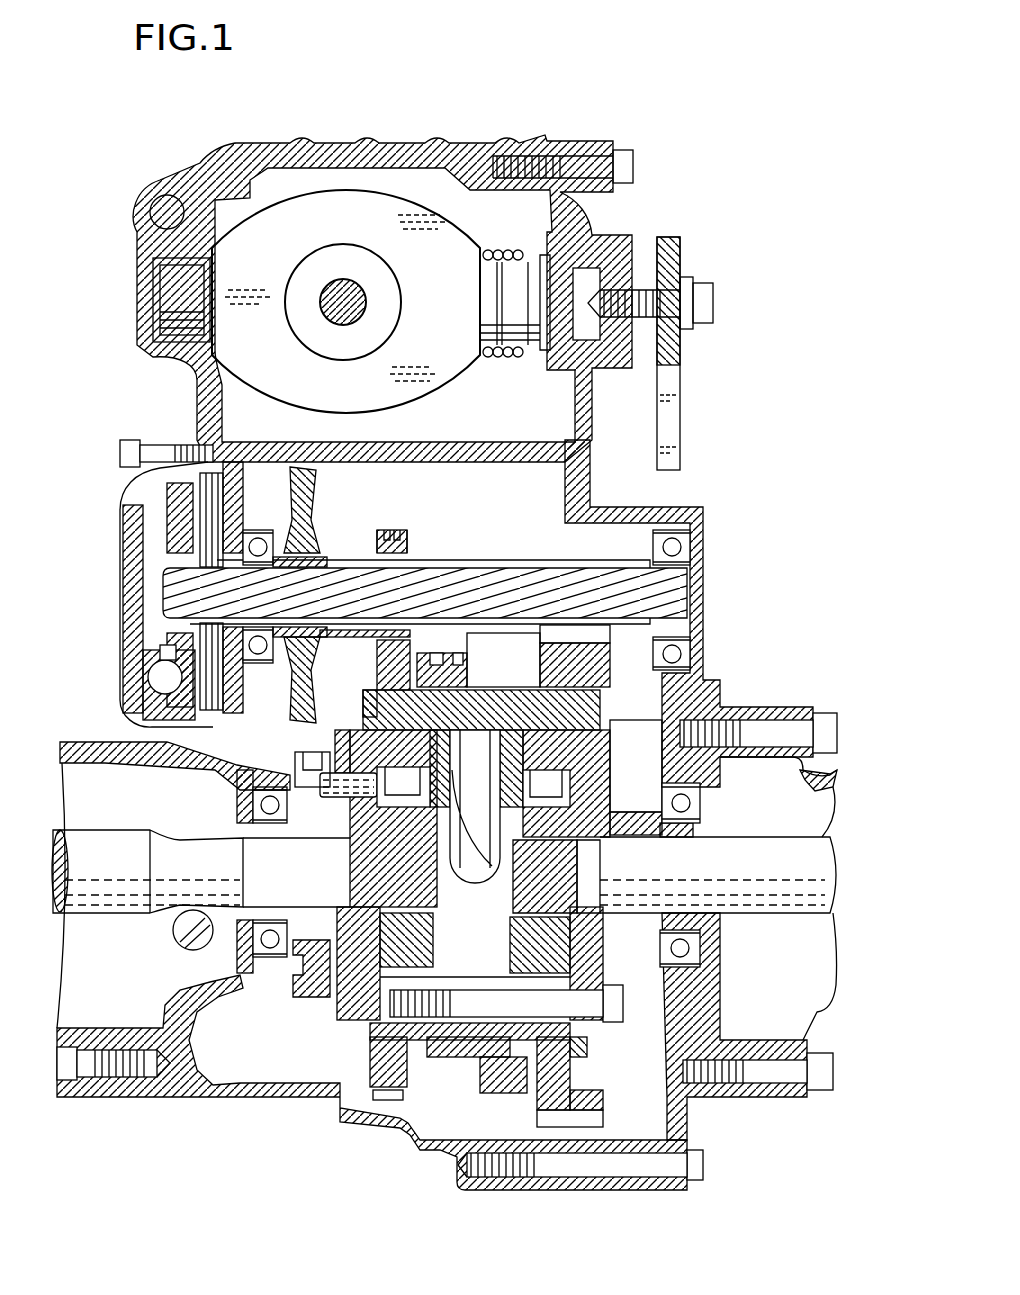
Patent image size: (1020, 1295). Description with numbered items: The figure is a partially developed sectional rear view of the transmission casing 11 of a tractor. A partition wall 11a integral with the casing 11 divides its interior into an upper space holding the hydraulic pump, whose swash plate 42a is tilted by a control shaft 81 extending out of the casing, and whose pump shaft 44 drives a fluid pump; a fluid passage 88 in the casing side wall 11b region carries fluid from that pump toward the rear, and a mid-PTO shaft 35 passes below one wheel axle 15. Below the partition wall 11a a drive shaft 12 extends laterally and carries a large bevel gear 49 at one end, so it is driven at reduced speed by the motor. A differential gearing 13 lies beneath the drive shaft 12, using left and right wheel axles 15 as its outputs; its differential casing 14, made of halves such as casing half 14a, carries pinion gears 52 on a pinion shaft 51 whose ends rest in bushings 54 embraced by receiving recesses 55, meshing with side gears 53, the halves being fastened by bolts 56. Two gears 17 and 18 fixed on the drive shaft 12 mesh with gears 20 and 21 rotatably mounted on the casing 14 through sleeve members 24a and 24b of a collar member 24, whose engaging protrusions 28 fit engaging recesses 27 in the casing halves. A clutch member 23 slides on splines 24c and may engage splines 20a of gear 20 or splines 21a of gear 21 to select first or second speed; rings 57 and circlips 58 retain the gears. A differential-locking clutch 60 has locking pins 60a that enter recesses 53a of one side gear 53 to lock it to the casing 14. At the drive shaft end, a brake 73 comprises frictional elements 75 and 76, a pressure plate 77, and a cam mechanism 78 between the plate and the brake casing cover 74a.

The transmission casing 11 is at (270, 1090).
The partition wall 11a is at (450, 455).
The housing side wall 11b is at (693, 693).
The drive shaft 12 is at (463, 583).
The differential gearing 13 is at (336, 1074).
The differential casing 14 is at (343, 1010).
The casing half 14a is at (590, 795).
The wheel axles 15 is at (92, 893).
The gear 17 is at (520, 563).
The gear 18 is at (390, 538).
The gear 20 is at (640, 1124).
The splines 20a is at (578, 692).
The gear 21 is at (383, 1108).
The splines 21a is at (408, 1137).
The clutch member 23 is at (457, 650).
The collar member 24 is at (497, 718).
The sleeve member 24a is at (588, 718).
The sleeve member 24b is at (312, 703).
The splines 24c is at (440, 1057).
The engaging recesses 27 is at (320, 760).
The engaging protrusions 28 is at (459, 663).
The mid-PTO shaft 35 is at (188, 936).
The swash plate 42a is at (362, 217).
The pump shaft 44 is at (365, 302).
The large bevel gear 49 is at (308, 482).
The pinion shaft 51 is at (487, 876).
The pinion gears 52 is at (585, 860).
The side gears 53 is at (445, 935).
The recesses 53a is at (300, 838).
The bushings 54 is at (445, 853).
The receiving recesses 55 is at (345, 870).
The bolts 56 is at (570, 997).
The rings 57 is at (372, 705).
The circlips 58 is at (365, 697).
The differential-locking clutch 60 is at (292, 978).
The locking pins 60a is at (293, 760).
The brake 73 is at (250, 455).
The cover 74a is at (122, 600).
The frictional elements 75 is at (222, 500).
The frictional elements 76 is at (160, 655).
The pressure plate 77 is at (185, 447).
The cam mechanism 78 is at (148, 678).
The control shaft 81 is at (540, 349).
The fluid passage 88 is at (162, 210).